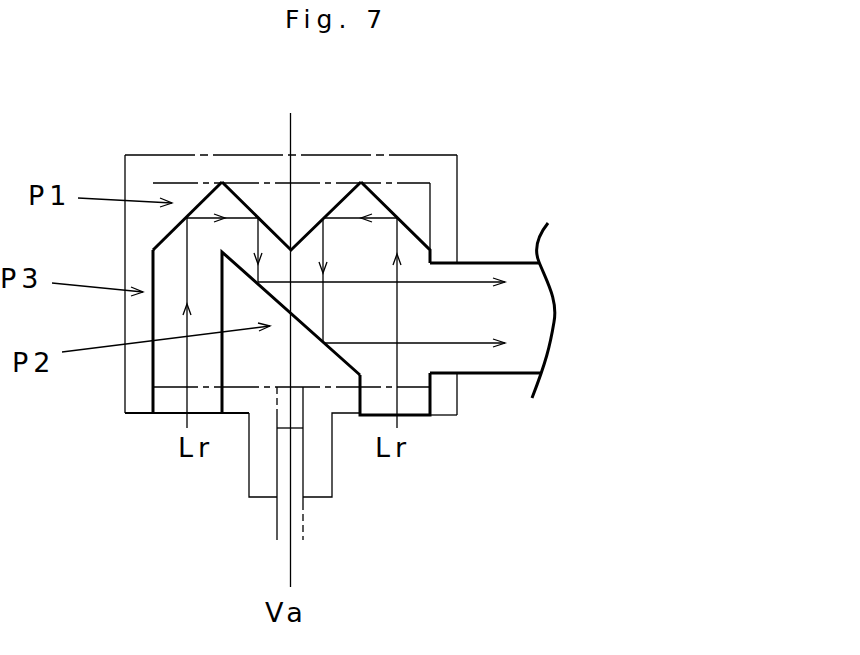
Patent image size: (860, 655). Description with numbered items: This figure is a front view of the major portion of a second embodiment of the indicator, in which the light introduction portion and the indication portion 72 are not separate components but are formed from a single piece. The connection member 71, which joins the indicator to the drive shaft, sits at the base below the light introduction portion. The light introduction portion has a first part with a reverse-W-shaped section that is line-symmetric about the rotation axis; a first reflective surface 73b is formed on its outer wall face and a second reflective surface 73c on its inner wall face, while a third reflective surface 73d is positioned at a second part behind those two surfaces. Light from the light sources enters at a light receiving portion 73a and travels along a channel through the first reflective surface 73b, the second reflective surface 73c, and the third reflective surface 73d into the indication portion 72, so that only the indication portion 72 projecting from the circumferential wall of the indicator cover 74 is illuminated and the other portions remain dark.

The connection member 71 is at (338, 456).
The indication portion 72 is at (515, 255).
The light receiving portion 73a is at (173, 413).
The first reflective surface 73b is at (206, 202).
The second reflective surface 73c is at (259, 205).
The third reflective surface 73d is at (335, 352).
The indicator cover 74 is at (393, 147).